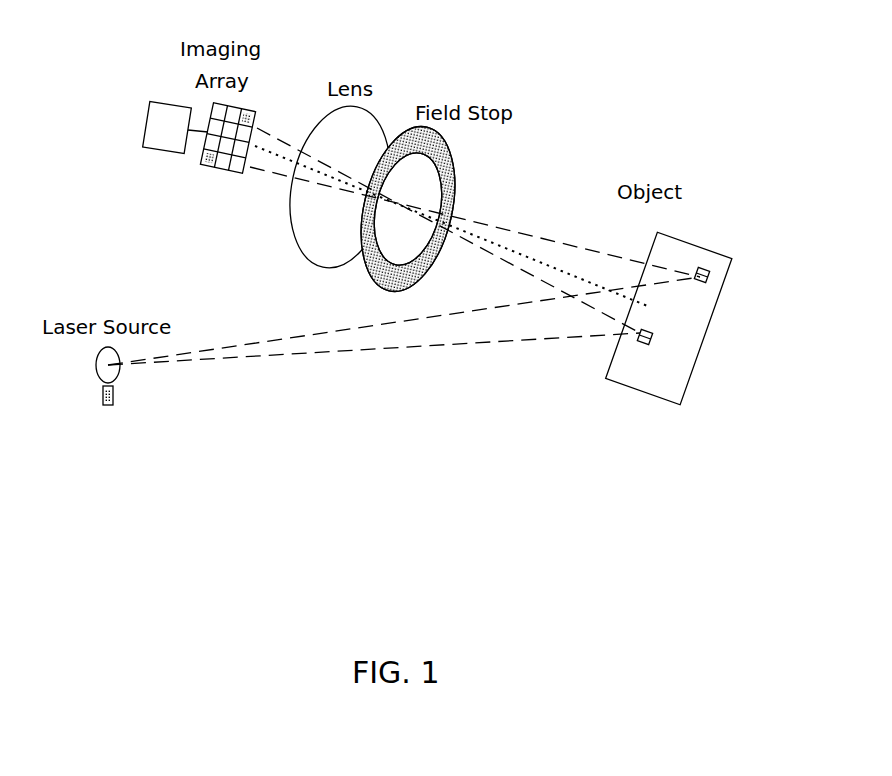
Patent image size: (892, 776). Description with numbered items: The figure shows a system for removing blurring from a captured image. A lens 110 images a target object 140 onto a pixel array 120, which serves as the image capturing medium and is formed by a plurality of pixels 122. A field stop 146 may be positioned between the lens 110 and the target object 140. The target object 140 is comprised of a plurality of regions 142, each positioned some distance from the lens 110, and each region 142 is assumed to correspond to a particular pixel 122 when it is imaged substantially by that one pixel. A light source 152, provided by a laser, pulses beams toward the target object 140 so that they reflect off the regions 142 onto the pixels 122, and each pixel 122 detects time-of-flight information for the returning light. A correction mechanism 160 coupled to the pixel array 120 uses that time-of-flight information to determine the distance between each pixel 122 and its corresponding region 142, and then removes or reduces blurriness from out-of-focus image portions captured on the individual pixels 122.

The lens 110 is at (385, 103).
The pixel array 120 is at (243, 105).
The pixels 122 is at (220, 172).
The target object 140 is at (712, 206).
The regions 142 is at (708, 273).
The field stop 146 is at (458, 173).
The light source 152 is at (118, 380).
The correction mechanism 160 is at (167, 153).